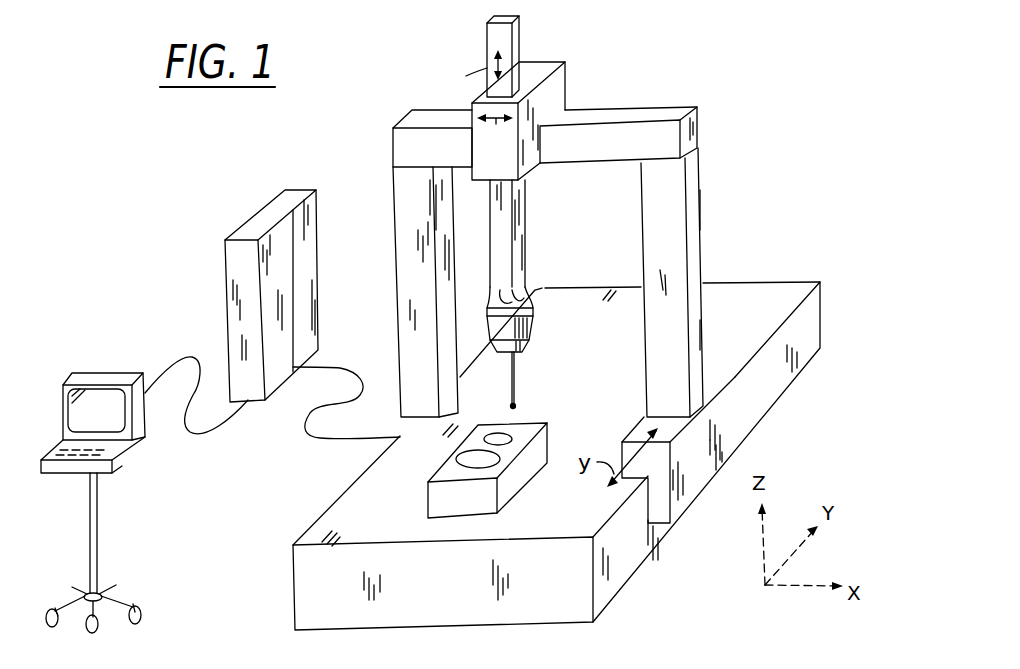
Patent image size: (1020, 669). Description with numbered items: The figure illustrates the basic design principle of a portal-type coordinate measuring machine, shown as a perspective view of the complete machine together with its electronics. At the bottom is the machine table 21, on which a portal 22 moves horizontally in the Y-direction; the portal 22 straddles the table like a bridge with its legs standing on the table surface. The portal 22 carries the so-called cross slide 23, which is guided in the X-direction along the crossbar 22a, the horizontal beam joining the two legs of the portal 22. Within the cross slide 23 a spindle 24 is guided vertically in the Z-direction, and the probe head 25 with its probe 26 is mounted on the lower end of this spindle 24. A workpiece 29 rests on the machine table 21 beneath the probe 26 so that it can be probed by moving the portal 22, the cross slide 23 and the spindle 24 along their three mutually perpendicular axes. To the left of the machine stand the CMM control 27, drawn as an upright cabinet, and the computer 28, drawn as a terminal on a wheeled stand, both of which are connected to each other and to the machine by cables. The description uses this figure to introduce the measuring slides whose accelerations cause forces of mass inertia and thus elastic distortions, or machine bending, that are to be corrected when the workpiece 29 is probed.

The machine table 21 is at (783, 290).
The portal 22 is at (692, 258).
The crossbar 22a is at (698, 112).
The cross slide 23 is at (562, 62).
The spindle 24 is at (490, 50).
The probe head 25 is at (533, 313).
The probe 26 is at (517, 385).
The CMM control 27 is at (265, 212).
The computer 28 is at (113, 457).
The workpiece 29 is at (540, 442).